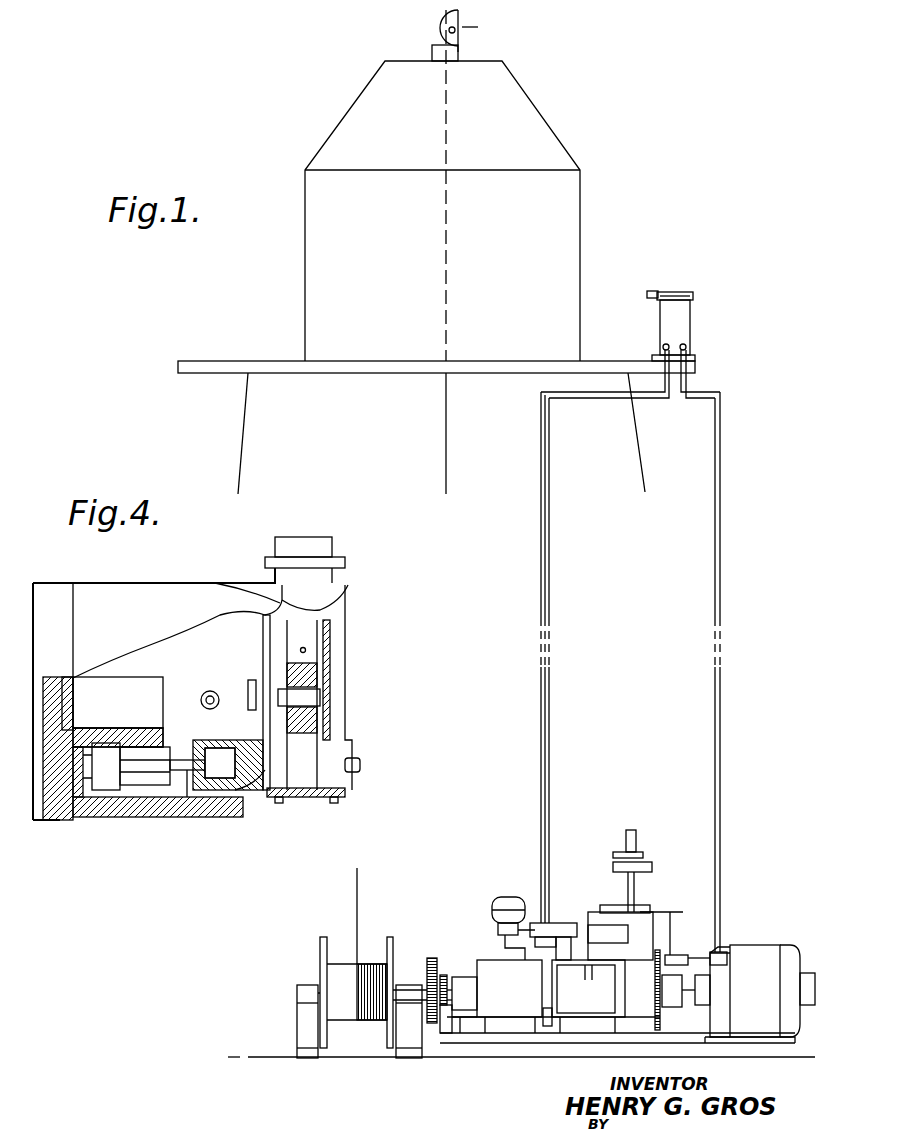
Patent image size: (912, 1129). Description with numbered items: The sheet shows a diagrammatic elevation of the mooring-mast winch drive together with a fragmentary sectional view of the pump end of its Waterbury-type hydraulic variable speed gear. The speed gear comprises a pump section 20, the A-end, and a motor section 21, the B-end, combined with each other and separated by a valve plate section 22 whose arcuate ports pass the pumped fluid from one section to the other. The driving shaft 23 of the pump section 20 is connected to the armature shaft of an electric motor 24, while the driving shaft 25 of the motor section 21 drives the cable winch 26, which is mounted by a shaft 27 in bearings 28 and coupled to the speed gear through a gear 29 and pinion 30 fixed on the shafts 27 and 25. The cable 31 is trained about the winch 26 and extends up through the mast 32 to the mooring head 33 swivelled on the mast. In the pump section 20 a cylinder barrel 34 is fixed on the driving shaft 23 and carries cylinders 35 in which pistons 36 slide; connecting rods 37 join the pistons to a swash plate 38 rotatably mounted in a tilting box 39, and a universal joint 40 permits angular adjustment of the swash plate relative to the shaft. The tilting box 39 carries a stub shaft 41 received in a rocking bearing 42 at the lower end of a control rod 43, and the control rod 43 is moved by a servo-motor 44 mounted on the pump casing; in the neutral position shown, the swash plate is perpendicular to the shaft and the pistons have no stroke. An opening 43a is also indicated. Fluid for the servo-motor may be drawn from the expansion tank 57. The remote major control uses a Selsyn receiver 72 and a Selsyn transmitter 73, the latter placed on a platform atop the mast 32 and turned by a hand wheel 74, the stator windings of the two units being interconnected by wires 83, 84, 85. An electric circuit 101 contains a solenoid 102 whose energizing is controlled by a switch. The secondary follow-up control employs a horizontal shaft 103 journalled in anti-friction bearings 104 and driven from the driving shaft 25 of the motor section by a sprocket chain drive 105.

In FIG. 1, the pump section 20 is at (588, 988).
In FIG. 4, the pump section 20 is at (152, 586).
In FIG. 1, the motor section 21 is at (509, 988).
In FIG. 1, the valve plate section 22 is at (540, 1010).
In FIG. 4, the valve plate section 22 is at (56, 592).
In FIG. 1, the driving shaft 23 is at (648, 1002).
In FIG. 4, the driving shaft 23 is at (262, 690).
In FIG. 1, the electric motor 24 is at (760, 994).
In FIG. 1, the driving shaft 25 is at (452, 982).
In FIG. 1, the cable winch 26 is at (398, 956).
In FIG. 1, the shaft 27 is at (318, 992).
In FIG. 1, the bearings 28 is at (308, 1043).
In FIG. 1, the gear 29 is at (434, 958).
In FIG. 1, the pinion 30 is at (435, 1022).
In FIG. 1, the cable 31 is at (360, 902).
In FIG. 1, the mast 32 is at (245, 424).
In FIG. 1, the mooring head 33 is at (430, 29).
In FIG. 4, the cylinder barrel 34 is at (112, 703).
In FIG. 4, the cylinders 35 is at (107, 790).
In FIG. 4, the pistons 36 is at (145, 777).
In FIG. 4, the connecting rods 37 is at (186, 778).
In FIG. 4, the swash plate 38 is at (235, 795).
In FIG. 4, the tilting box 39 is at (252, 685).
In FIG. 4, the universal joint 40 is at (190, 695).
In FIG. 4, the stub shaft 41 is at (322, 700).
In FIG. 4, the rocking bearing 42 is at (330, 676).
In FIG. 4, the control rod 43 is at (330, 641).
In FIG. 4, the opening 43a is at (308, 652).
In FIG. 1, the servo-motor 44 is at (640, 890).
In FIG. 1, the expansion tank 57 is at (508, 896).
In FIG. 1, the Selsyn receiver 72 is at (560, 925).
In FIG. 1, the Selsyn transmitter 73 is at (683, 320).
In FIG. 1, the hand wheel 74 is at (688, 294).
In FIG. 1, the wire 83 is at (551, 593).
In FIG. 1, the wire 84 is at (547, 553).
In FIG. 1, the wire 85 is at (539, 521).
In FIG. 1, the electric circuit 101 is at (717, 730).
In FIG. 1, the solenoid 102 is at (722, 954).
In FIG. 1, the horizontal shaft 103 is at (590, 1020).
In FIG. 1, the bearings 104 is at (547, 1033).
In FIG. 1, the sprocket chain drive 105 is at (471, 1032).